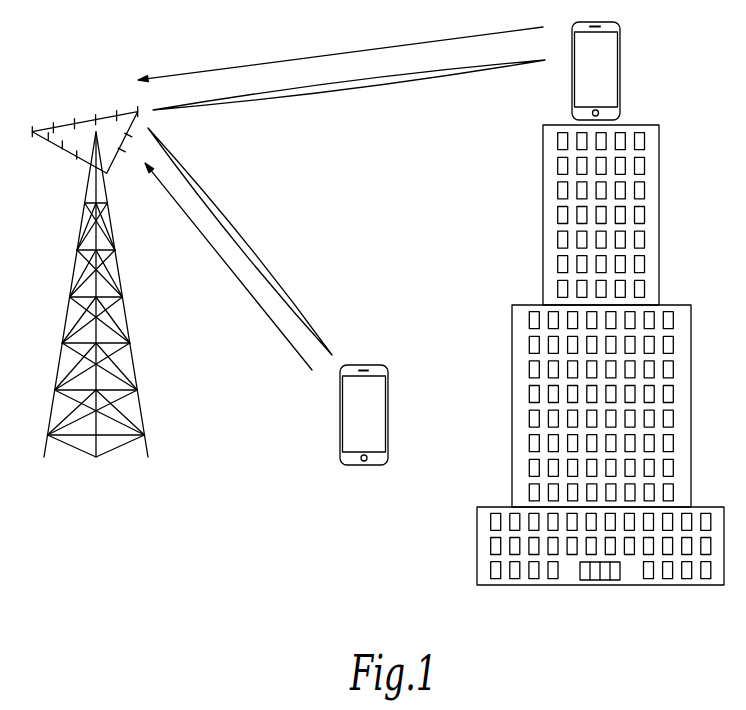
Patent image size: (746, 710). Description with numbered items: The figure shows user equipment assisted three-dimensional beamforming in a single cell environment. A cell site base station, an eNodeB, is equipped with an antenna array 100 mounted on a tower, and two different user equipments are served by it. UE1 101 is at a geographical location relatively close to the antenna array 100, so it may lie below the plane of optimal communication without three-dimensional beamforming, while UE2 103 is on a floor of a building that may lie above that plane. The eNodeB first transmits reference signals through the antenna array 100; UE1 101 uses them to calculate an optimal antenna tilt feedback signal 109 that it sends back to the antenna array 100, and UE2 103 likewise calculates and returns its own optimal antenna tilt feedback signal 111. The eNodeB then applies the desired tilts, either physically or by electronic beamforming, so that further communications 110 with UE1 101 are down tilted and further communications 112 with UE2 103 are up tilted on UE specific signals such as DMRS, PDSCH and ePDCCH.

The antenna array 100 is at (73, 121).
The UE1 101 is at (390, 415).
The UE2 103 is at (622, 67).
The optimal antenna tilt feedback signal 109 is at (231, 271).
The further communications 110 is at (250, 243).
The optimal antenna tilt feedback signal 111 is at (348, 52).
The further communications 112 is at (356, 89).